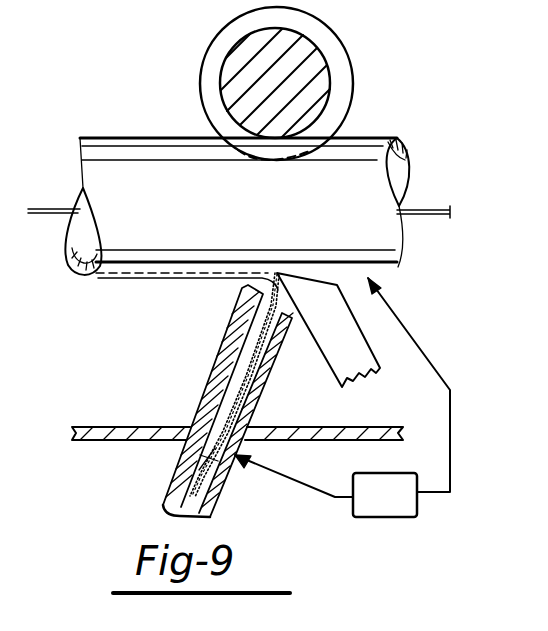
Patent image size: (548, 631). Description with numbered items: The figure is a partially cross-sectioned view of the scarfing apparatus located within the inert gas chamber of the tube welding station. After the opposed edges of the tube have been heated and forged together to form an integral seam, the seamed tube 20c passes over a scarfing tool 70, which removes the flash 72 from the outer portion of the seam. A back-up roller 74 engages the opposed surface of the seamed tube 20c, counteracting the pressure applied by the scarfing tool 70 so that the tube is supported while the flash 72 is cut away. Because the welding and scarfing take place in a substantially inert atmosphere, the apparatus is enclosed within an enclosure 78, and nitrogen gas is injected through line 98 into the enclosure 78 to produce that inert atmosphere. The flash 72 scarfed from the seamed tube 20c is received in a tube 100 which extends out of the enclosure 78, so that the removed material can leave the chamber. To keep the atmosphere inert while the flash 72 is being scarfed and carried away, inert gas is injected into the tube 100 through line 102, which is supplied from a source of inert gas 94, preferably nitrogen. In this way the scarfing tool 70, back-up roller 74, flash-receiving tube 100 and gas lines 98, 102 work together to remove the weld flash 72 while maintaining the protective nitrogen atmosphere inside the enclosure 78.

The back-up roller 74 is at (293, 85).
The seamed tube 20c is at (145, 193).
The tube 100 is at (233, 328).
The flash 72 is at (236, 392).
The scarfing tool 70 is at (348, 340).
The line 98 is at (470, 310).
The enclosure 78 is at (127, 443).
The line 102 is at (291, 478).
The source of inert gas 94 is at (417, 497).